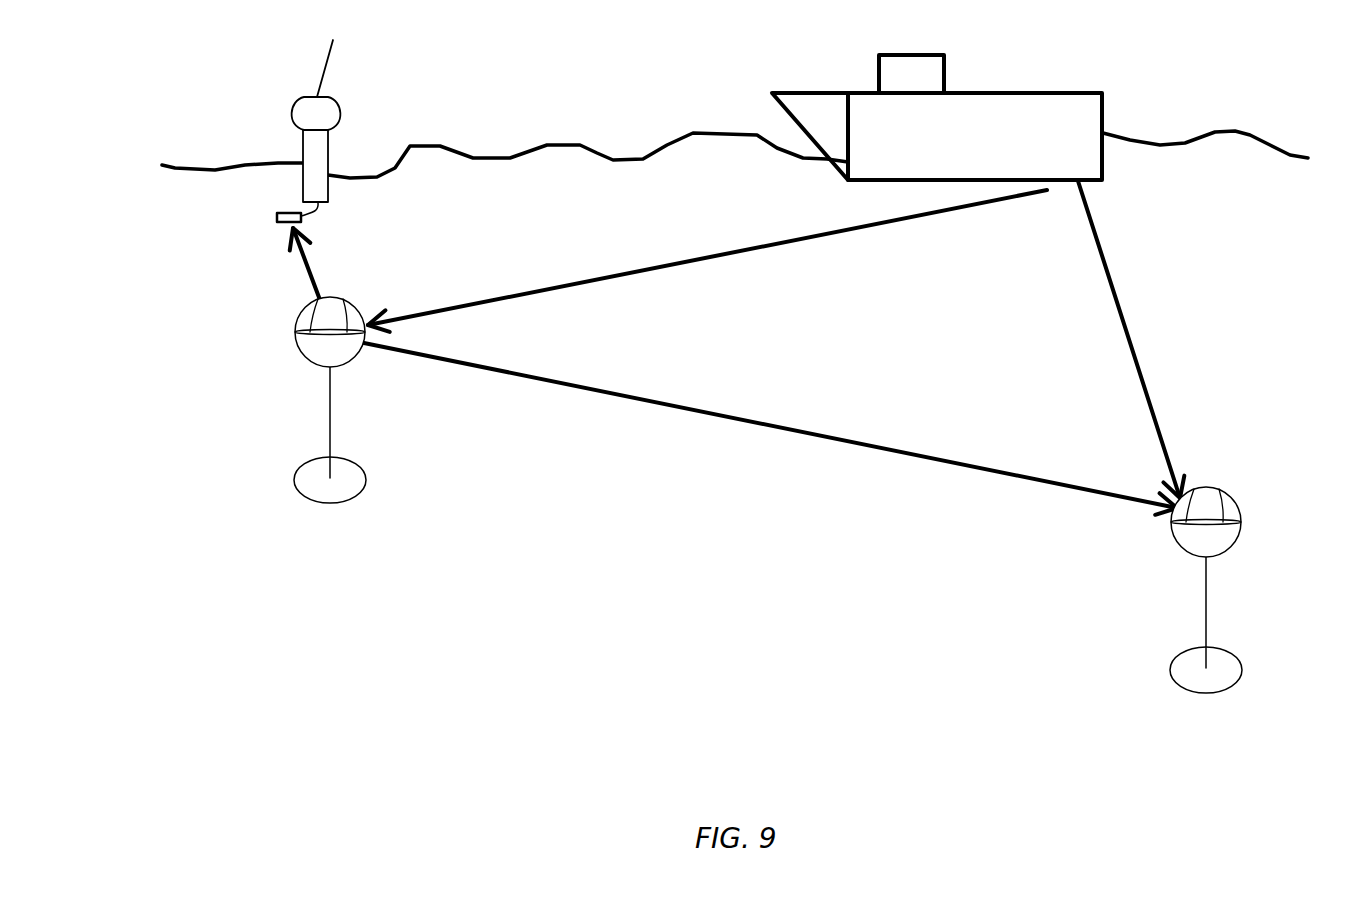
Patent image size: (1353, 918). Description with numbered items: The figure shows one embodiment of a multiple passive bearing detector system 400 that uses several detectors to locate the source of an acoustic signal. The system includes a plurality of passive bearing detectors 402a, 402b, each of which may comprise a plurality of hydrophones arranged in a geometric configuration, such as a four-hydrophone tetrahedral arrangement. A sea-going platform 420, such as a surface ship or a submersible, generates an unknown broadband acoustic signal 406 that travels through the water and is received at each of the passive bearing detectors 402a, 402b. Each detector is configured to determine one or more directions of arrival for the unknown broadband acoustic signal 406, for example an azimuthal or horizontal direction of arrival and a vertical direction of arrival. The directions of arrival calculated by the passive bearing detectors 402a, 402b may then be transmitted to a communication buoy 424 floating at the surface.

The multiple passive bearing detector system 400 is at (450, 80).
The communication buoy 424 is at (303, 96).
The sea-going platform 420 is at (1009, 93).
The unknown broadband acoustic signal 406 is at (578, 278).
The passive bearing detector 402b is at (301, 311).
The passive bearing detector 402a is at (1206, 487).